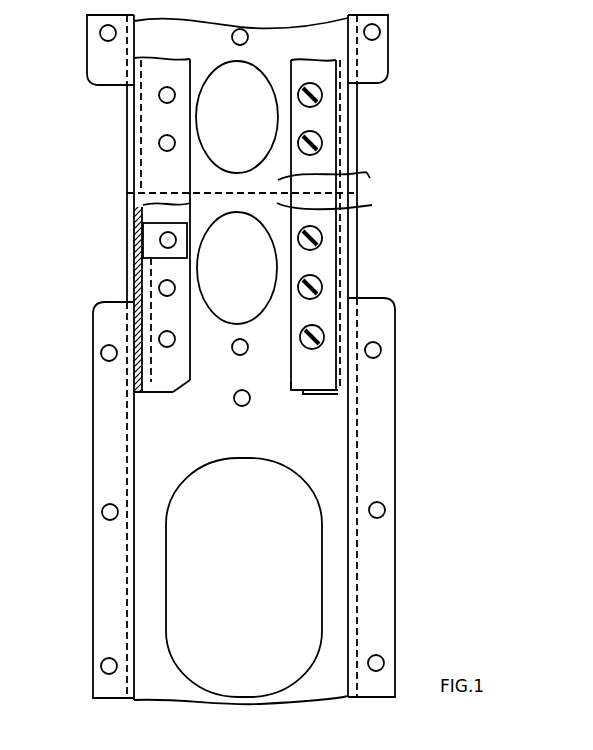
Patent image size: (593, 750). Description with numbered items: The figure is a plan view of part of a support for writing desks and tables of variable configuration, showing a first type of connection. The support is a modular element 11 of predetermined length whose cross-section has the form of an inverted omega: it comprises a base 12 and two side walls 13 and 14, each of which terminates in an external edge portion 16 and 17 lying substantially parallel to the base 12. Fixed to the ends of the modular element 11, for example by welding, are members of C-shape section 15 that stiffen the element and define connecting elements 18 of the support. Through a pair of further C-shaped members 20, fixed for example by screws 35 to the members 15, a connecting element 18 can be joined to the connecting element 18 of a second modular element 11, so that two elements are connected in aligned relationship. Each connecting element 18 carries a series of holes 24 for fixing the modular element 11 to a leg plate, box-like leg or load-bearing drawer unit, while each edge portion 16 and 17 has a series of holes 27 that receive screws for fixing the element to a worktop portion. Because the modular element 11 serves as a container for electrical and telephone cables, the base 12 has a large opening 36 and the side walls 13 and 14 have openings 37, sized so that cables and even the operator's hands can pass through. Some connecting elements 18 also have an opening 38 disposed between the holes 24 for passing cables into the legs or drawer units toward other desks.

The modular element 11 is at (397, 77).
The base 12 is at (292, 30).
The side wall 13 is at (352, 467).
The side wall 14 is at (127, 455).
The C-shape section member 15 is at (187, 385).
The edge portion 16 is at (100, 72).
The edge portion 17 is at (376, 76).
The connecting element 18 is at (360, 206).
The C-shaped member 20 is at (165, 389).
The holes 24 is at (236, 40).
The holes 27 is at (106, 38).
The screws 35 is at (321, 102).
The opening 36 is at (228, 692).
The opening 37 is at (128, 656).
The opening 38 is at (220, 221).